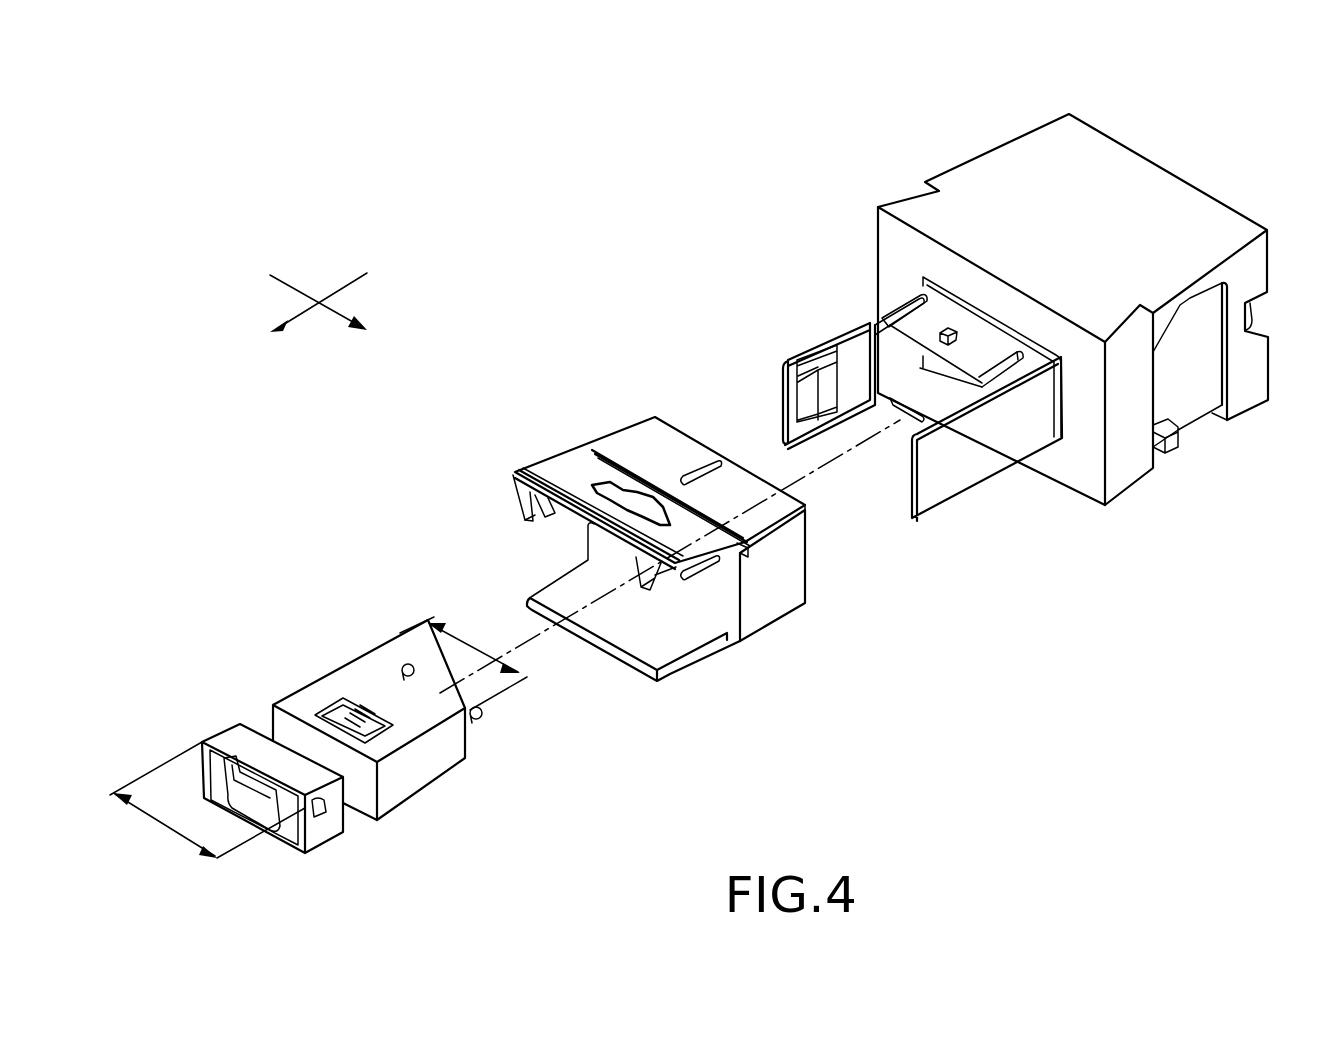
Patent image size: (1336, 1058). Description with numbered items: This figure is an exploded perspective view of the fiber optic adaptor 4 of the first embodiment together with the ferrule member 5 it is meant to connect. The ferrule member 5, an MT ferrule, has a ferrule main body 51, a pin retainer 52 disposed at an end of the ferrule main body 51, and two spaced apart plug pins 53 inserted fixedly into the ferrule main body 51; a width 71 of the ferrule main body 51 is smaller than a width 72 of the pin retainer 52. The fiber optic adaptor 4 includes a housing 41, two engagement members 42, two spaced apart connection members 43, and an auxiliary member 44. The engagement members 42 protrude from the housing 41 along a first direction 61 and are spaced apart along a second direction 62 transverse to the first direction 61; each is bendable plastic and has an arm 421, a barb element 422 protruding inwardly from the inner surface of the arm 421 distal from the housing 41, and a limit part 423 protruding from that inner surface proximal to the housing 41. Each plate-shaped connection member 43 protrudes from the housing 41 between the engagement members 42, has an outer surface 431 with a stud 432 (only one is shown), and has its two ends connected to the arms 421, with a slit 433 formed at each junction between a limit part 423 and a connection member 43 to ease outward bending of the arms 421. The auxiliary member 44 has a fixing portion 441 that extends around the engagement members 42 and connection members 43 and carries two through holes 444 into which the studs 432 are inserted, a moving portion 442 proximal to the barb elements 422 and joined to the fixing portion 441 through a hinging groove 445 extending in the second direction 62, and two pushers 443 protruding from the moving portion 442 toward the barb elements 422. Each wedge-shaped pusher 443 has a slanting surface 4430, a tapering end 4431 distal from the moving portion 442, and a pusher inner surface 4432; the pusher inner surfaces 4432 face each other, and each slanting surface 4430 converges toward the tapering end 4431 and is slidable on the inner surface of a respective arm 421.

The fiber optic adaptor 4 is at (655, 300).
The housing 41 is at (1190, 200).
The engagement member 42 is at (762, 345).
The arm 421 is at (820, 345).
The barb element 422 is at (824, 397).
The limit part 423 is at (886, 326).
The connection member 43 is at (878, 315).
The outer surface 431 is at (993, 333).
The stud 432 is at (950, 329).
The slit 433 is at (893, 290).
The auxiliary member 44 is at (815, 633).
The fixing portion 441 is at (663, 433).
The moving portion 442 is at (563, 468).
The pusher 443 is at (485, 507).
The slanting surface 4430 is at (663, 612).
The tapering end 4431 is at (643, 587).
The pusher inner surface 4432 is at (540, 518).
The through hole 444 is at (700, 470).
The hinging groove 445 is at (627, 463).
The ferrule member 5 is at (288, 648).
The ferrule main body 51 is at (433, 763).
The pin retainer 52 is at (362, 818).
The plug pin 53 is at (402, 667).
The first direction 61 is at (341, 287).
The second direction 62 is at (299, 289).
The width of the ferrule main body 71 is at (463, 662).
The width of the pin retainer 72 is at (207, 800).